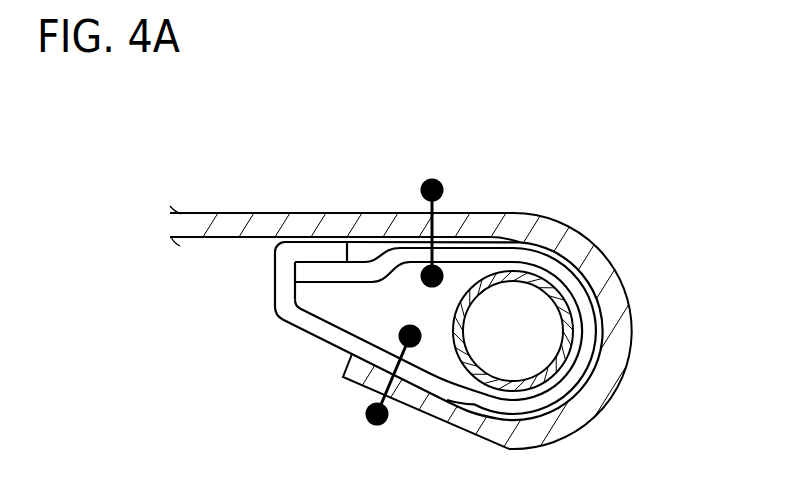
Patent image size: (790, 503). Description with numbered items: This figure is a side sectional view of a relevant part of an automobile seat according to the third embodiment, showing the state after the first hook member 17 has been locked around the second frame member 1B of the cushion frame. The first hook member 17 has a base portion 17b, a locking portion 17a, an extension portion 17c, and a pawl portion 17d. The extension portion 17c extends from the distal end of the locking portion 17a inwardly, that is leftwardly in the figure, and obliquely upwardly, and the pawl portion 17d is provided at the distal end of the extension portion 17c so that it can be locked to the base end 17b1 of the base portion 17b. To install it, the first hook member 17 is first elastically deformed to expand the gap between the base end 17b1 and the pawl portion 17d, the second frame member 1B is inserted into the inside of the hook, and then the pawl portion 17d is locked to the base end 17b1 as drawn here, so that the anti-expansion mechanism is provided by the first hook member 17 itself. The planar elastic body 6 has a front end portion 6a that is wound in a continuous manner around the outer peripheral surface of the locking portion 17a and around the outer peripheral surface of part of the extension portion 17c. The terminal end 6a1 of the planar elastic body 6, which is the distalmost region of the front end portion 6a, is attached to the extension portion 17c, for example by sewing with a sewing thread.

The planar elastic body 6 is at (430, 289).
The front end portion 6a is at (612, 383).
The terminal end 6a1 is at (366, 389).
The second frame member 1B is at (535, 317).
The first hook member 17 is at (468, 272).
The locking portion 17a is at (593, 331).
The base portion 17b is at (482, 250).
The base end 17b1 is at (327, 272).
The extension portion 17c is at (318, 333).
The pawl portion 17d is at (289, 251).